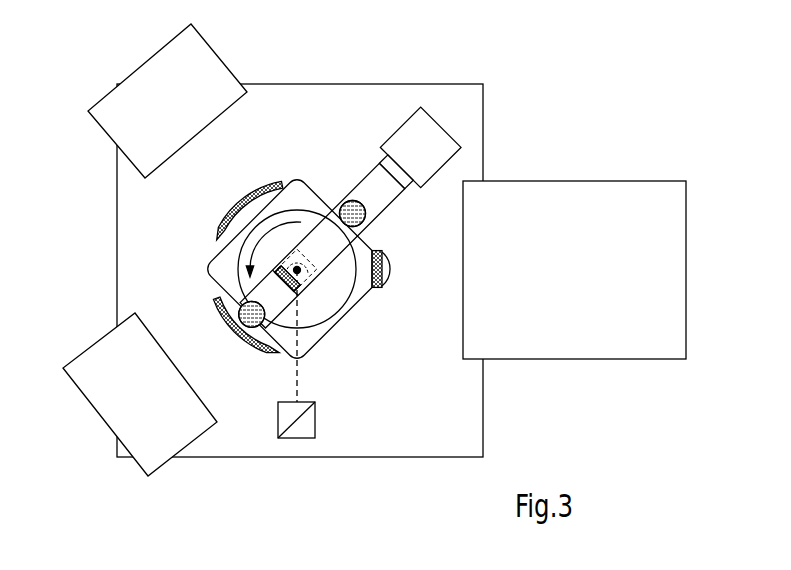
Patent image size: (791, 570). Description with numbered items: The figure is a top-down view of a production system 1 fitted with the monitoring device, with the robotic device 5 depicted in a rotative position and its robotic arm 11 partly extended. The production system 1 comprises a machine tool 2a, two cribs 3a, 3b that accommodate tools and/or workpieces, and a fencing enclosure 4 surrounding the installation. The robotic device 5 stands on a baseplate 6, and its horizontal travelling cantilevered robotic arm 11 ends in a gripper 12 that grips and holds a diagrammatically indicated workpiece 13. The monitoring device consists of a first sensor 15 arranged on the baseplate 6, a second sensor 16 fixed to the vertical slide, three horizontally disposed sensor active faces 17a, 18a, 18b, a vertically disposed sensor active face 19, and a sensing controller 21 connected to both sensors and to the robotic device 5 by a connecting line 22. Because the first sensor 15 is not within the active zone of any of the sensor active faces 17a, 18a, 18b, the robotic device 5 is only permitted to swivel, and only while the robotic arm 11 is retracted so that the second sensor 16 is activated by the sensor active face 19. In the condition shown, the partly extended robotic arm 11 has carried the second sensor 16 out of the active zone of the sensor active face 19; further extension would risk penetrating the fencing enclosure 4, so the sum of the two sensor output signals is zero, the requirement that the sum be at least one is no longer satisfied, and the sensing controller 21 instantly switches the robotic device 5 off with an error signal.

The production system 1 is at (503, 40).
The machine tool 2a is at (619, 185).
The crib 3a is at (160, 82).
The crib 3b is at (125, 402).
The fencing enclosure 4 is at (300, 458).
The robotic device 5 is at (368, 345).
The baseplate 6 is at (360, 293).
The robotic arm 11 is at (378, 188).
The gripper 12 is at (388, 165).
The workpiece 13 is at (423, 145).
The first sensor 15 is at (370, 218).
The second sensor 16 is at (240, 313).
The sensor active face 17a is at (387, 270).
The sensor active face 18a is at (250, 188).
The sensor active face 18b is at (256, 348).
The sensor active face 19 is at (289, 278).
The sensing controller 21 is at (307, 427).
The connecting line 22 is at (300, 378).